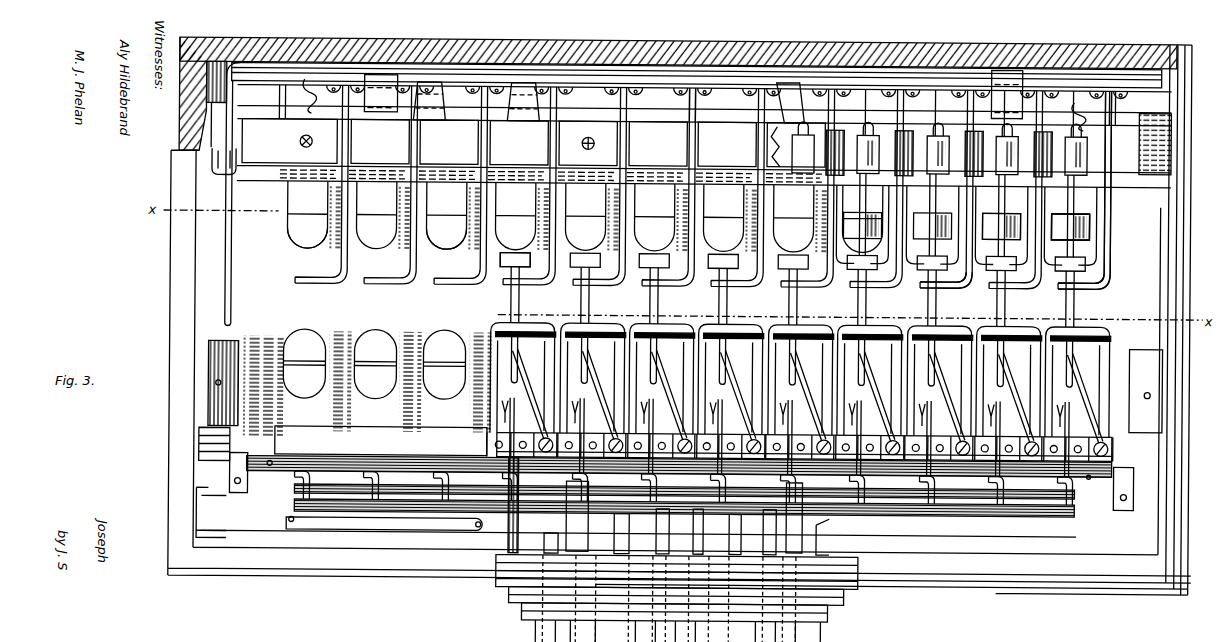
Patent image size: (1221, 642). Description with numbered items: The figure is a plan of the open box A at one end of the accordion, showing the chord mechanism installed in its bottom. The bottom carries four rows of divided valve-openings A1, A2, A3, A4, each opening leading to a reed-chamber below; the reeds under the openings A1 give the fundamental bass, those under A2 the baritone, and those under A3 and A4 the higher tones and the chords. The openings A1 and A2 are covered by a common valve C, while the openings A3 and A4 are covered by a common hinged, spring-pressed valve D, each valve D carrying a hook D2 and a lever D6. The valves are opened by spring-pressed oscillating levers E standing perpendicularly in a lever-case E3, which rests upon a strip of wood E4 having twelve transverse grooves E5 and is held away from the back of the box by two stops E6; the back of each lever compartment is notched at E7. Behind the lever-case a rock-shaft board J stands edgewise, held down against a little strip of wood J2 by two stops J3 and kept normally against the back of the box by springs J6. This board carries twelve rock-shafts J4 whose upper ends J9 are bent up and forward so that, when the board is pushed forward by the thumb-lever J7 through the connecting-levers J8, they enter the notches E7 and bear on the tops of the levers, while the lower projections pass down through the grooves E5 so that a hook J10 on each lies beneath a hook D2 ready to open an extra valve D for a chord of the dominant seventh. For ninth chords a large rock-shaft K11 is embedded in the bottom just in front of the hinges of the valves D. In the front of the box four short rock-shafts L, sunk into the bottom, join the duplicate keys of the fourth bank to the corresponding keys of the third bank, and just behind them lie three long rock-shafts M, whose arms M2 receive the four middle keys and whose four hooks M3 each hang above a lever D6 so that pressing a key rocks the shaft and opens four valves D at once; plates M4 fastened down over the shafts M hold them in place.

The box A is at (1062, 582).
The valve-openings A1 is at (293, 202).
The valve-openings A2 is at (297, 238).
The valve-openings A3 is at (395, 342).
The valve-openings A4 is at (374, 386).
The valve C is at (1120, 208).
The valve D is at (502, 372).
The hook D2 is at (514, 288).
The lever D6 is at (510, 446).
The oscillating levers E is at (988, 189).
The lever-case E3 is at (1143, 143).
The strip of wood E4 is at (289, 141).
The transverse grooves E5 is at (410, 134).
The stops E6 is at (522, 82).
The notches E7 is at (860, 90).
The rock-shaft board J is at (1088, 88).
The strip of wood J2 is at (1125, 108).
The stops J3 is at (380, 80).
The rock-shafts J4 is at (346, 258).
The springs J6 is at (318, 77).
The thumb-lever J7 is at (340, 524).
The connecting-levers J8 is at (222, 132).
The upper ends J9 is at (282, 110).
The hook J10 is at (328, 280).
The large rock-shaft K11 is at (357, 460).
The short rock-shafts L is at (834, 532).
The long rock-shafts M is at (1032, 512).
The arms M2 is at (600, 510).
The hooks M3 is at (756, 494).
The plates M4 is at (889, 234).